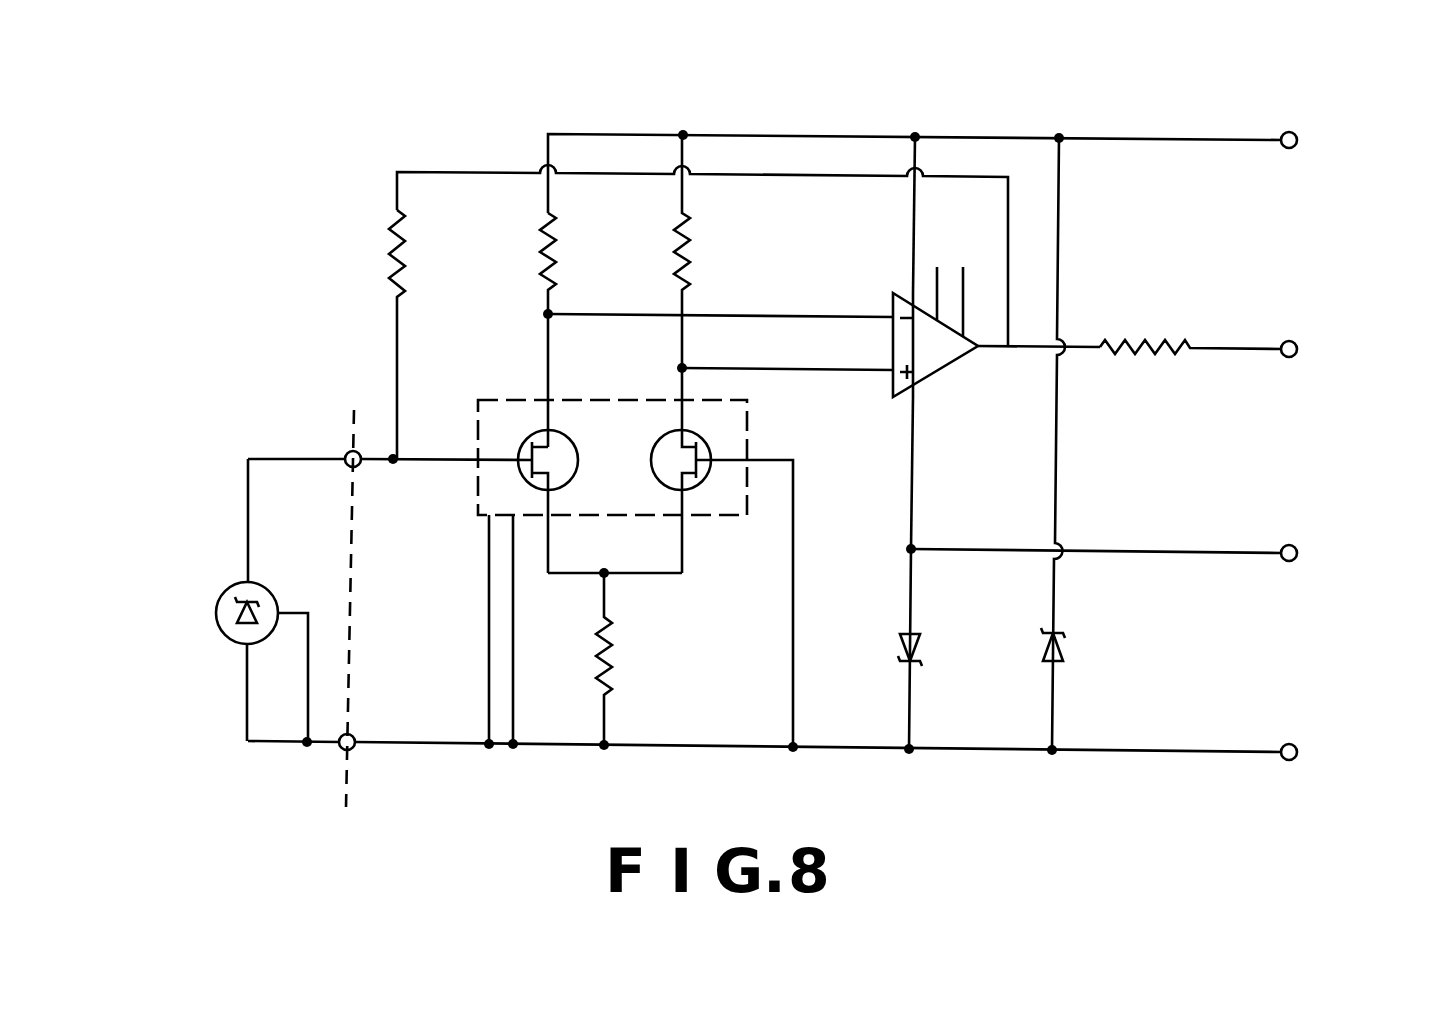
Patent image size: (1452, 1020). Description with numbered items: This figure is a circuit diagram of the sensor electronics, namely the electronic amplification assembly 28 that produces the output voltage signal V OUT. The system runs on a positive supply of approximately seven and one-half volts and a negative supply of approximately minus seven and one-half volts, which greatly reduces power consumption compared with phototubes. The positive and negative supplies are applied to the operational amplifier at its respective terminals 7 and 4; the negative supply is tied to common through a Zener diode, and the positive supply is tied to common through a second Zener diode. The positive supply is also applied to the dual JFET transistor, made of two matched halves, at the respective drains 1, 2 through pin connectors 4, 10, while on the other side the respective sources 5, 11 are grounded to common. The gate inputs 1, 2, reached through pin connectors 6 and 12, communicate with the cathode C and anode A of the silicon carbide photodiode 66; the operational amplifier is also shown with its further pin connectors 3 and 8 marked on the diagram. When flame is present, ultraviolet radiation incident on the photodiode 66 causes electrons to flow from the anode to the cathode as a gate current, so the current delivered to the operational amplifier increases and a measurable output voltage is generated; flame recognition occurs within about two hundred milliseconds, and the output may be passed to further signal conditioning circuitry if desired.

The electronic amplification assembly 28 is at (933, 98).
The silicon carbide photodiode 66 is at (260, 600).
The drain 1 is at (927, 293).
The drain 2 is at (787, 353).
The op-amp V1 pin 3 (inverting input) 3 is at (720, 294).
The terminal 4 is at (894, 471).
The source 5 is at (552, 523).
The pin connector 6 is at (1036, 322).
The terminal 7 is at (898, 215).
The op-amp V1 pin 8 is at (951, 301).
The pin connector 10 is at (659, 402).
The source 11 is at (707, 523).
The pin connector 12 is at (756, 583).